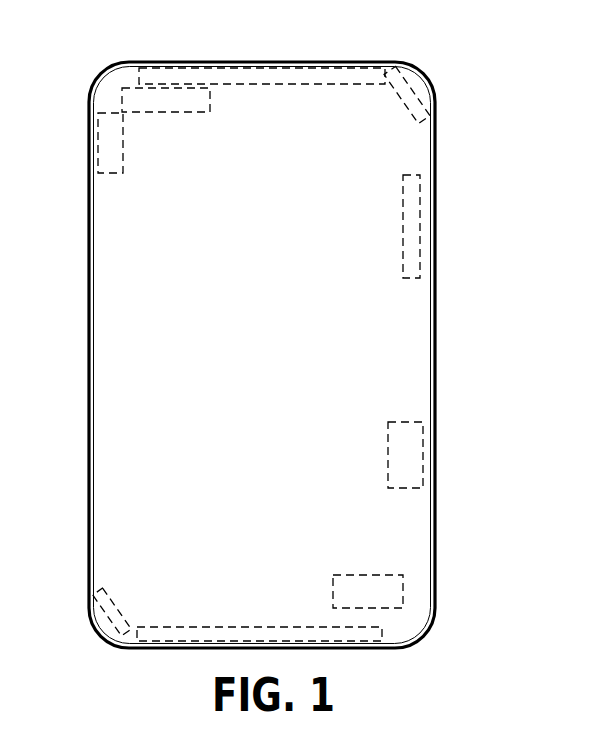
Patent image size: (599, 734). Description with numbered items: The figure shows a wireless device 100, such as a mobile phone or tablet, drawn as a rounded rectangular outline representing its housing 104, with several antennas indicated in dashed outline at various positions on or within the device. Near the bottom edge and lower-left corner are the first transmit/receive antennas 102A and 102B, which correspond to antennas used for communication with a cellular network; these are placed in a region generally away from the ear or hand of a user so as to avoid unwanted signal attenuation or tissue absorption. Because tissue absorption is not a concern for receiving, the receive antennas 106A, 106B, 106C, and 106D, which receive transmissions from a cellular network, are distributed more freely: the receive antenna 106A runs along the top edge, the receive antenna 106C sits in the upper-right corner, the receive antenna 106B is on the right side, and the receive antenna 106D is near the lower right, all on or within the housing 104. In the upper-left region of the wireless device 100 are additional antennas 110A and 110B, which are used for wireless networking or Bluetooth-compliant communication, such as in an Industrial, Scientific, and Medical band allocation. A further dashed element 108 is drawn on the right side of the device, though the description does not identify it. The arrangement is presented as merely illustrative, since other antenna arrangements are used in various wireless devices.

The wireless device 100 is at (472, 47).
The housing 104 is at (101, 72).
The receive antenna 106A is at (300, 85).
The receive antenna 106B is at (396, 422).
The receive antenna 106C is at (404, 100).
The receive antenna 106D is at (358, 575).
The sensor 108 is at (403, 212).
The antenna 110A is at (146, 112).
The antenna 110B is at (112, 174).
The first transmit/receive antenna 102A is at (160, 627).
The first transmit/receive antenna 102B is at (106, 593).